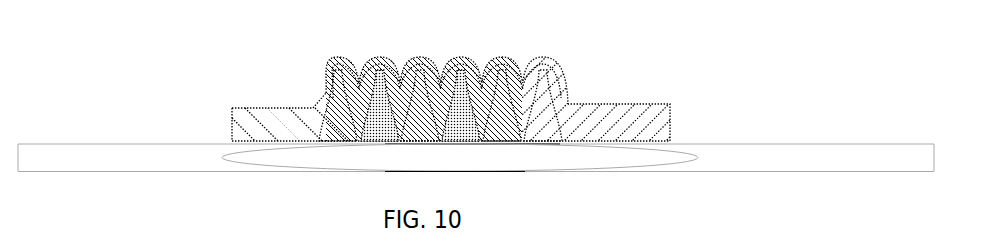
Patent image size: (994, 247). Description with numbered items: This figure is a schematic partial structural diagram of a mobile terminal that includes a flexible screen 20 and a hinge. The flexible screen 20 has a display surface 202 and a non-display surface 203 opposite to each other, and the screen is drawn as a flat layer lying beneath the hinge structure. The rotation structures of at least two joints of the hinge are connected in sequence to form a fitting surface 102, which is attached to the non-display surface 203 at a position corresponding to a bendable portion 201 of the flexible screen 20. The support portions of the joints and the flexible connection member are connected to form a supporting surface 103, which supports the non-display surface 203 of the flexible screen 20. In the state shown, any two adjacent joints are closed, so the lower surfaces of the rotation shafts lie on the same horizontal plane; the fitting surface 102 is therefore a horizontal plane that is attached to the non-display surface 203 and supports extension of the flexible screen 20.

The flexible screen 20 is at (476, 115).
The bendable portion 201 is at (699, 147).
The display surface 202 is at (776, 172).
The non-display surface 203 is at (760, 145).
The fitting surface 102 is at (607, 138).
The supporting surface 103 is at (492, 65).